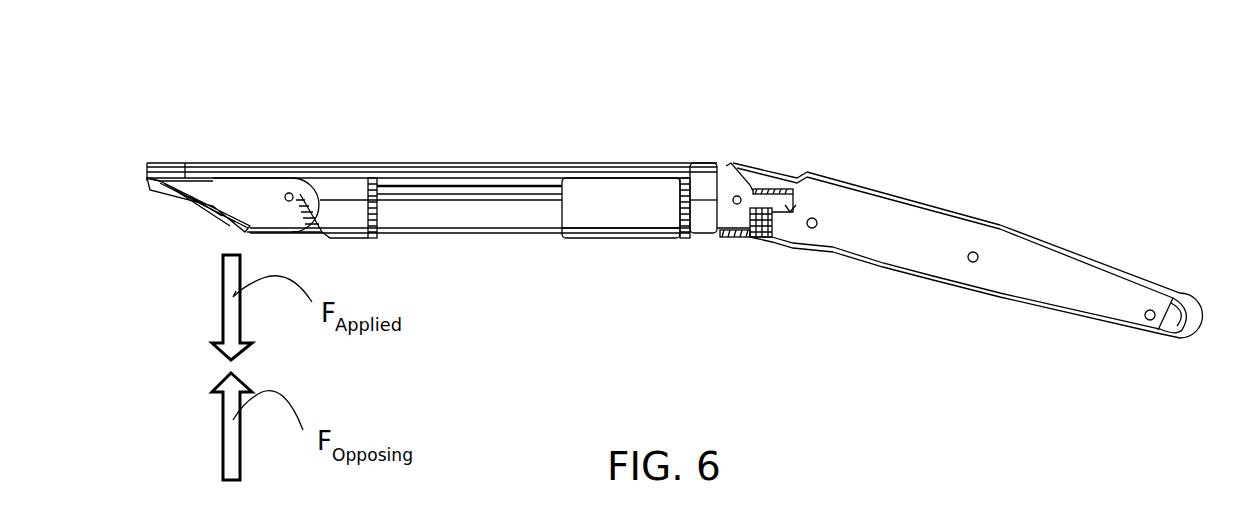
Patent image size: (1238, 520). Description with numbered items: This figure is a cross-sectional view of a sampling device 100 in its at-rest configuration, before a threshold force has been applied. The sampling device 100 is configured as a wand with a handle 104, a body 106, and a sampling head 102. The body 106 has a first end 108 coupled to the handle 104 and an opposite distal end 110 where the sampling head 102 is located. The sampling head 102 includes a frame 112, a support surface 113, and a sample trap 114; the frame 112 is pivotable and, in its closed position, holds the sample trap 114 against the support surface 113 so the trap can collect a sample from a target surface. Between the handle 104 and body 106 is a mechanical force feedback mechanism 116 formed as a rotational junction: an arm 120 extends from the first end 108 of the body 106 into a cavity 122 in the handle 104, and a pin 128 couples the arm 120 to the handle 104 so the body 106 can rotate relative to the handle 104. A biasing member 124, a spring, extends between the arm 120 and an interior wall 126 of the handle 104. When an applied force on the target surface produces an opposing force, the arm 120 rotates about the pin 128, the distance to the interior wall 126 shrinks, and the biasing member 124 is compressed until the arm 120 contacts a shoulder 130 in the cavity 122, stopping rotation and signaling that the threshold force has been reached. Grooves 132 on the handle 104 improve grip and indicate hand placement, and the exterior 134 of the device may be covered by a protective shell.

The sampling device 100 is at (1048, 150).
The sampling head 102 is at (292, 156).
The handle 104 is at (1047, 250).
The body 106 is at (520, 197).
The first end 108 is at (700, 160).
The distal end 110 is at (146, 179).
The frame 112 is at (266, 207).
The support surface 113 is at (202, 208).
The sample trap 114 is at (180, 203).
The mechanical force feedback mechanism 116 is at (747, 267).
The arm 120 is at (773, 189).
The cavity 122 is at (790, 212).
The biasing member 124 is at (768, 232).
The interior wall 126 is at (747, 237).
The pin 128 is at (736, 196).
The shoulder 130 is at (773, 222).
The grooves 132 is at (860, 183).
The exterior 134 is at (393, 170).